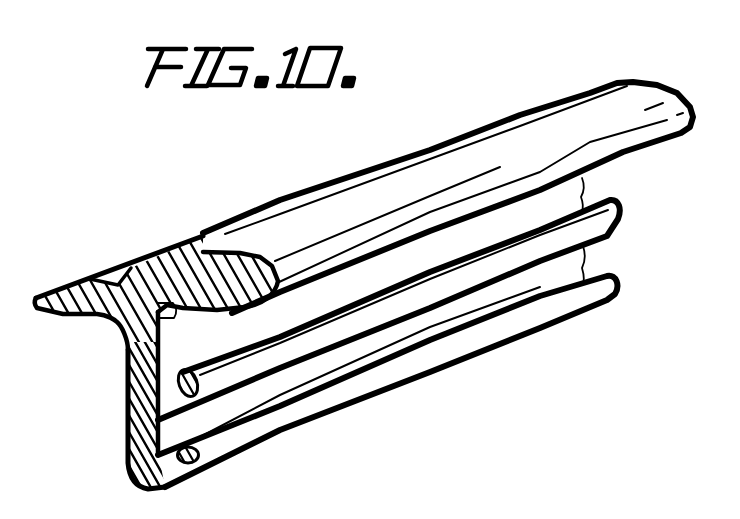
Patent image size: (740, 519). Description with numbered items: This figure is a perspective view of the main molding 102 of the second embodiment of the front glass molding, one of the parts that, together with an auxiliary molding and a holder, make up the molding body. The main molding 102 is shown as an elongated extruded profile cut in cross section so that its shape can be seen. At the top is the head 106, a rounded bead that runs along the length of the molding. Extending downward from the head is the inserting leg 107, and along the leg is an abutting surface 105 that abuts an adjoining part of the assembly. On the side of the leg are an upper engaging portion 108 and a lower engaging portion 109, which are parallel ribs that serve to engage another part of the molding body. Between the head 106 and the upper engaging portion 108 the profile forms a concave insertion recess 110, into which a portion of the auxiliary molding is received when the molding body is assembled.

The main molding 102 is at (445, 138).
The abutting surface 105 is at (127, 395).
The head 106 is at (205, 263).
The inserting leg 107 is at (138, 353).
The upper engaging portion 108 is at (478, 258).
The lower engaging portion 109 is at (410, 355).
The concave insertion recess 110 is at (172, 342).